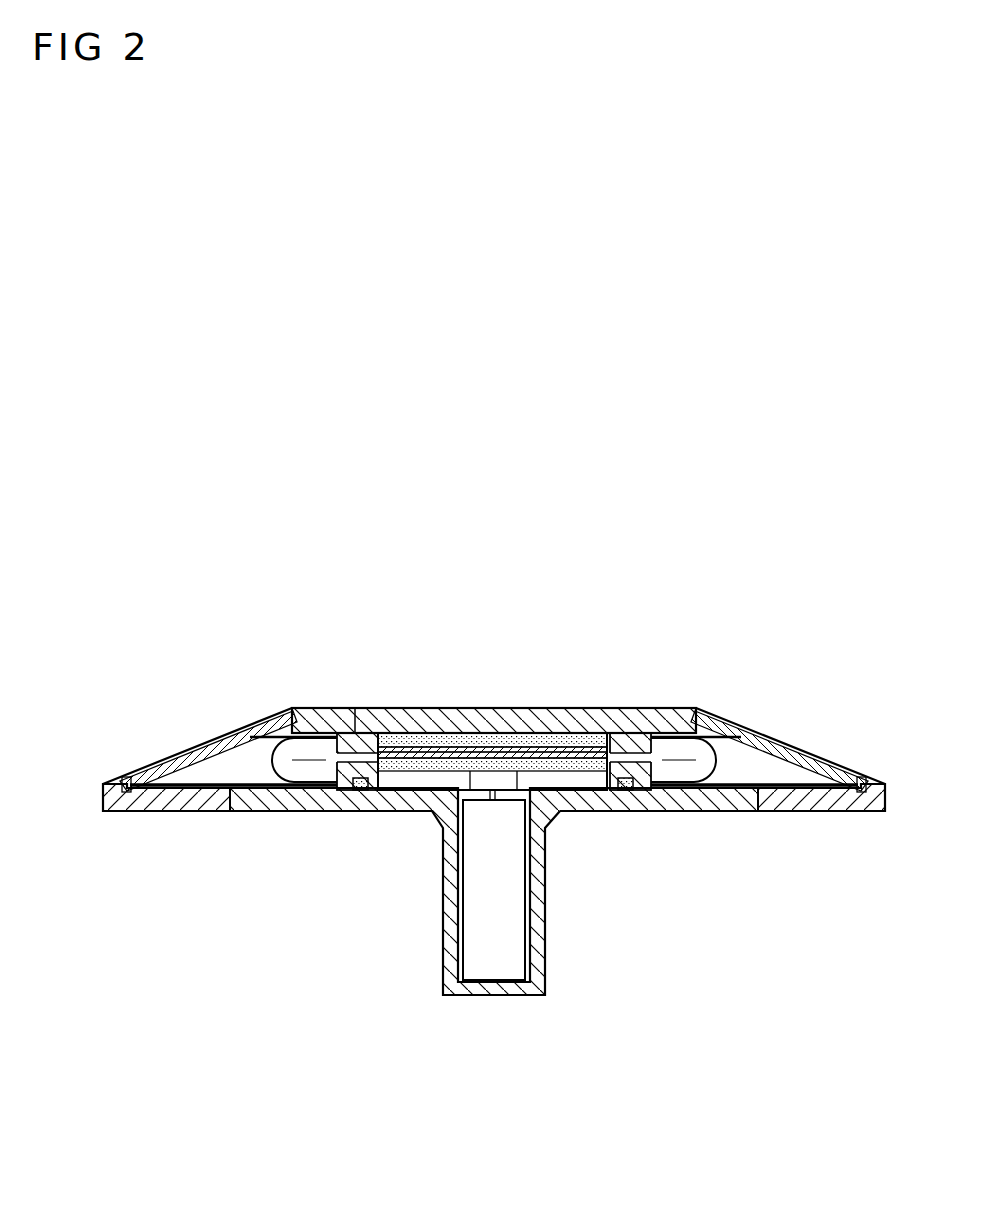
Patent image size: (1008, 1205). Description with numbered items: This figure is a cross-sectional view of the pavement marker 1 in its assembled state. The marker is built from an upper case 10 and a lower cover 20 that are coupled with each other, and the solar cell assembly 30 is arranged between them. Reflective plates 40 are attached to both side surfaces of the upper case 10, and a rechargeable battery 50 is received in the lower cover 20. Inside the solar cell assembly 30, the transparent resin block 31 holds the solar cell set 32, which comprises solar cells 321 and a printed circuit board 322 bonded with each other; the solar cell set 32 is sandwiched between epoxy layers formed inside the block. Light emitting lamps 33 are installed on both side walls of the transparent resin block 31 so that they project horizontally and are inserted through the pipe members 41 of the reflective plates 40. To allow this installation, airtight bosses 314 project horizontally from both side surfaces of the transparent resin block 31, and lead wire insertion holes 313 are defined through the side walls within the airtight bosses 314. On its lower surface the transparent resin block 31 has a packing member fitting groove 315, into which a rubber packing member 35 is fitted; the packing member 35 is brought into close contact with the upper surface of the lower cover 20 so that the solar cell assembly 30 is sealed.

The pavement marker 1 is at (563, 602).
The upper case 10 is at (143, 812).
The lower cover 20 is at (437, 907).
The solar cell assembly 30 is at (494, 758).
The transparent resin block 31 is at (477, 658).
The lead wire insertion hole 313 is at (357, 717).
The airtight boss 314 is at (655, 788).
The packing member fitting groove 315 is at (640, 770).
The solar cell set 32 is at (415, 815).
The solar cells 321 is at (397, 757).
The printed circuit board 322 is at (423, 753).
The light emitting lamp 33 is at (688, 770).
The packing member 35 is at (620, 745).
The reflective plate 40 is at (514, 704).
The pipe member 41 is at (260, 728).
The rechargeable battery 50 is at (505, 940).